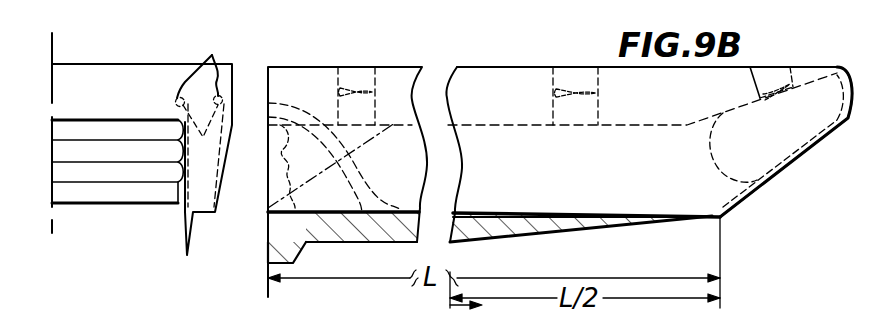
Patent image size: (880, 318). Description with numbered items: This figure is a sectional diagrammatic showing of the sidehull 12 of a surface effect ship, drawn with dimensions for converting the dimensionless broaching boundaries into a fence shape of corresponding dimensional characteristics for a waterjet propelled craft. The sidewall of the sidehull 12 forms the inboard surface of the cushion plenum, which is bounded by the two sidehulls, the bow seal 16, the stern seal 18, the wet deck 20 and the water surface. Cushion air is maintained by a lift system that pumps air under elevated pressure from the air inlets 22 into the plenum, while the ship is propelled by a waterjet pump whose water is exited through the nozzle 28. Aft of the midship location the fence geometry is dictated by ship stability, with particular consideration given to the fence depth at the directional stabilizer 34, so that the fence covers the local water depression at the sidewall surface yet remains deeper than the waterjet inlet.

The sidehull 12 is at (230, 158).
The bow seal 16 is at (787, 169).
The stern seal 18 is at (90, 182).
The wet deck 20 is at (617, 127).
The air inlets 22 is at (353, 68).
The nozzle 28 is at (212, 55).
The directional stabilizer 34 is at (266, 255).